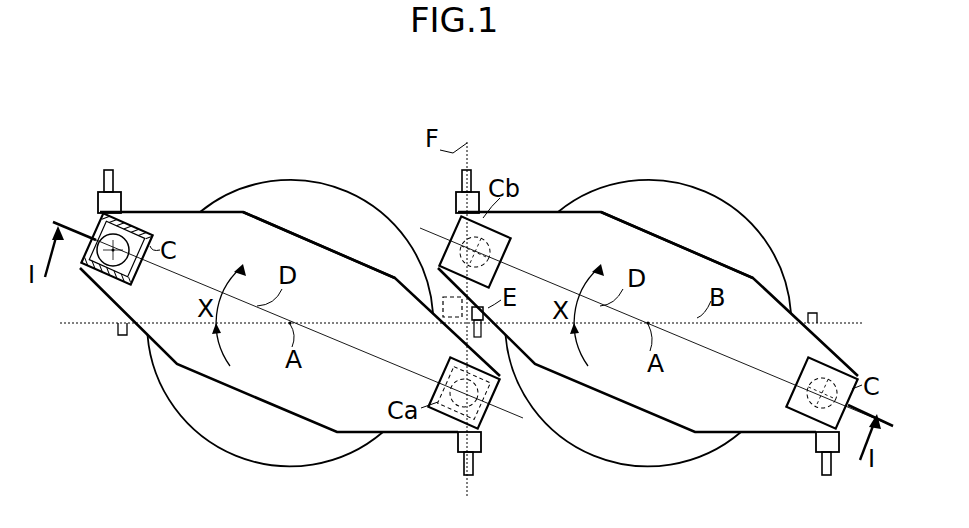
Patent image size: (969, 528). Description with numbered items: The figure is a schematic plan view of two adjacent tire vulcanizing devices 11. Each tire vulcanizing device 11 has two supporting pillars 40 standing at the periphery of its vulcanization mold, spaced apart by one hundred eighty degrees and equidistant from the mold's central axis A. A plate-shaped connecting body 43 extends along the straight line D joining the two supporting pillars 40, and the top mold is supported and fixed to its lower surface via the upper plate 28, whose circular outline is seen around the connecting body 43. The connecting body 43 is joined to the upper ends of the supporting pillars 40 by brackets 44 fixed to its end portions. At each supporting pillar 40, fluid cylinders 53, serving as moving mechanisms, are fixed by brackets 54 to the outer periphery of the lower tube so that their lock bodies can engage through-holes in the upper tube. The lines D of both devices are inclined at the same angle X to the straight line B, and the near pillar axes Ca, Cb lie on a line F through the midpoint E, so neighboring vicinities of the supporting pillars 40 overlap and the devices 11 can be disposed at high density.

The tire vulcanizing device 11 is at (251, 186).
The upper plate 28 is at (348, 213).
The supporting pillar 40 is at (96, 230).
The connecting body 43 is at (258, 248).
The bracket 44 is at (130, 215).
The fluid cylinder 53 is at (108, 172).
The bracket 54 is at (121, 195).